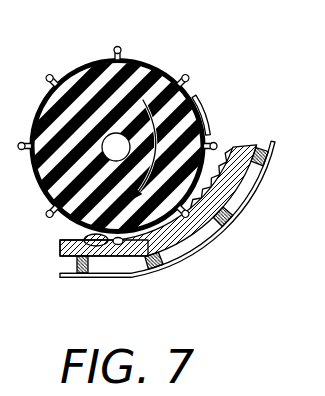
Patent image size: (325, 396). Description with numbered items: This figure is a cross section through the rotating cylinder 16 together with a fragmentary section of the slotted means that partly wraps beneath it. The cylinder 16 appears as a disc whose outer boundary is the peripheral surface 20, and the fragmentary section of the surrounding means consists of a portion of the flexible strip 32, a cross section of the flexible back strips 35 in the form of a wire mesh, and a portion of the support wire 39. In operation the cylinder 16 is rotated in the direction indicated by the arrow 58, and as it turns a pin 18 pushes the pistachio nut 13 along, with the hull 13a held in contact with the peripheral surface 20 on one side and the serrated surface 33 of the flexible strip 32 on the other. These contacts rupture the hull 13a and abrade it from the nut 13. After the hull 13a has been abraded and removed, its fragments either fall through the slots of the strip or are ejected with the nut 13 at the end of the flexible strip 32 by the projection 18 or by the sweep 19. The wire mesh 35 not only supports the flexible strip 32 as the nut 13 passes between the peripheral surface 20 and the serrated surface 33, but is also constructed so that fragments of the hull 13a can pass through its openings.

The peripheral surface 20 is at (137, 62).
The cylinder 16 is at (157, 74).
The sweep 19 is at (197, 101).
The arrow 58 is at (203, 127).
The pin 18 is at (193, 207).
The flexible back strips 35 is at (232, 220).
The nut 13 is at (147, 275).
The hull 13a is at (110, 274).
The support wire 39 is at (72, 278).
The serrated surface 33 is at (85, 238).
The flexible strip 32 is at (60, 248).